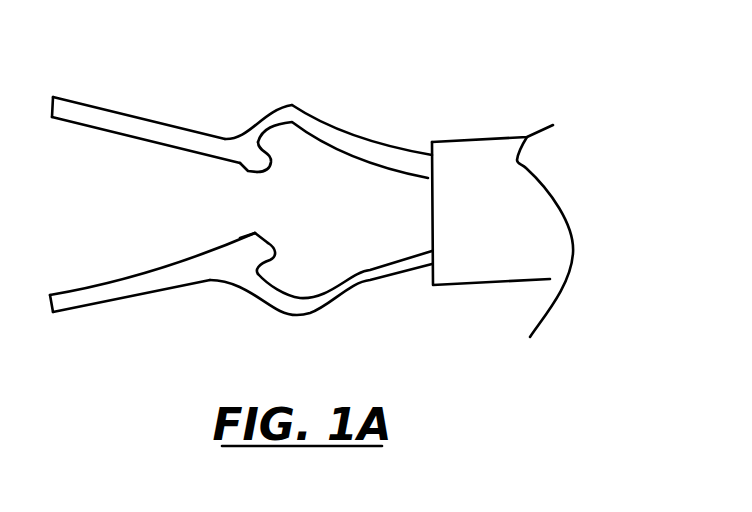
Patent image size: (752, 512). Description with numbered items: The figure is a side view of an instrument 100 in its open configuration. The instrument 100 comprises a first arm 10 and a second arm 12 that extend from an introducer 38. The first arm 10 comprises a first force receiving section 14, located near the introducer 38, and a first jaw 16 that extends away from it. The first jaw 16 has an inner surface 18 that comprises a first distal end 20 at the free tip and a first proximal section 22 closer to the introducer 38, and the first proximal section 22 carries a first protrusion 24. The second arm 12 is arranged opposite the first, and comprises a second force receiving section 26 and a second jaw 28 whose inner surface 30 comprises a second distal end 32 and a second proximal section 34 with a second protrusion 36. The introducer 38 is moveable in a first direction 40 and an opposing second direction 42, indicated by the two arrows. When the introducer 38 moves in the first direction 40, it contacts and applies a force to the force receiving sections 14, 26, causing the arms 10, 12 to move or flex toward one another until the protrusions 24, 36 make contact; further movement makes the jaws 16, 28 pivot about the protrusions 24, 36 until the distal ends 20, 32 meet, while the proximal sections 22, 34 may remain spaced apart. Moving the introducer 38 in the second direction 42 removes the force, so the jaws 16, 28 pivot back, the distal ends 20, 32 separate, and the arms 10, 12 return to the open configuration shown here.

The instrument 100 is at (425, 70).
The first arm 10 is at (253, 141).
The second arm 12 is at (255, 280).
The first force receiving section 14 is at (382, 145).
The first jaw 16 is at (158, 125).
The inner surface 18 is at (138, 139).
The first distal end 20 is at (50, 120).
The first proximal section 22 is at (271, 164).
The first protrusion 24 is at (248, 172).
The second force receiving section 26 is at (375, 282).
The second jaw 28 is at (137, 294).
The inner surface 30 is at (142, 275).
The second distal end 32 is at (48, 293).
The second proximal section 34 is at (270, 243).
The second protrusion 36 is at (250, 236).
The introducer 38 is at (495, 224).
The first direction 40 is at (502, 396).
The second direction 42 is at (638, 458).